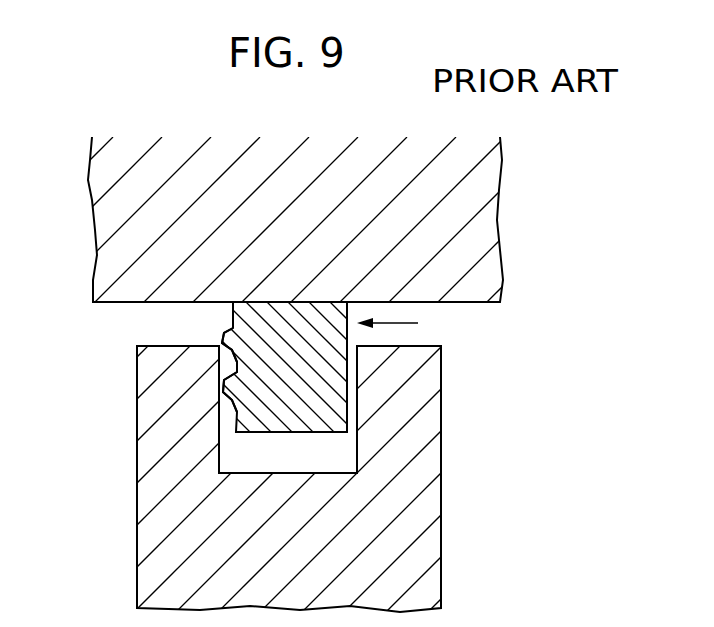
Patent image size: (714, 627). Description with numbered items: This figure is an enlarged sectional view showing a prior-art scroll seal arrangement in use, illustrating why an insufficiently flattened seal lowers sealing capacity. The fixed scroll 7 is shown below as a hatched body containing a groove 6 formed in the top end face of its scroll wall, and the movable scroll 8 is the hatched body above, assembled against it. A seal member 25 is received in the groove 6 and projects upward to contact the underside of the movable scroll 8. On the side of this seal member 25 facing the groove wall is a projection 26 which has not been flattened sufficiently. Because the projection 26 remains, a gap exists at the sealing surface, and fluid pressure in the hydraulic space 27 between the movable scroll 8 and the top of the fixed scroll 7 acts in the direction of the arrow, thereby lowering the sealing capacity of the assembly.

The movable scroll 8 is at (475, 195).
The hydraulic space 27 is at (403, 309).
The projection 25 is at (318, 386).
The projection 26 is at (220, 363).
The groove 6 is at (222, 446).
The fixed scroll 7 is at (393, 510).